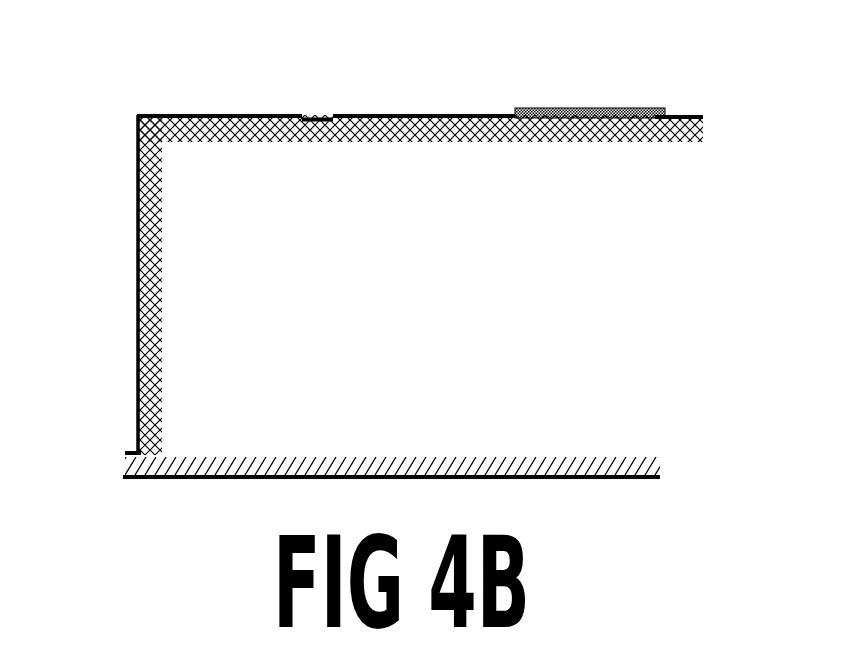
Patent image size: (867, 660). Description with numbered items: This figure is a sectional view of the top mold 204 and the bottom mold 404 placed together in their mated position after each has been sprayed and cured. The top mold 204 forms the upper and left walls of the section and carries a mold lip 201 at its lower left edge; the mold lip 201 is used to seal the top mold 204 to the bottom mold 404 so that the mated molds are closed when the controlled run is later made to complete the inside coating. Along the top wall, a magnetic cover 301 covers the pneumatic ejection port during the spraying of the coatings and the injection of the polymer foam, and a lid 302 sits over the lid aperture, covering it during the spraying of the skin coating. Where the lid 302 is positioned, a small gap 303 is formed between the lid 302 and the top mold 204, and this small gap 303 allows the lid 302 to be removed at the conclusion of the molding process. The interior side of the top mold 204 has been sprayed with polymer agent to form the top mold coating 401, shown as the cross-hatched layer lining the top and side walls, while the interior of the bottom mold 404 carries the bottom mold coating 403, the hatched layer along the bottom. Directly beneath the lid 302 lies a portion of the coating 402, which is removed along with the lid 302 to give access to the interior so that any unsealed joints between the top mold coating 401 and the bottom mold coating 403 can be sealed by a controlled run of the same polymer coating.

The top mold 204 is at (233, 113).
The mold lip 201 is at (127, 453).
The magnetic cover 301 is at (317, 115).
The lid 302 is at (615, 118).
The small gap 303 is at (663, 113).
The top mold coating 401 is at (462, 142).
The portion of the coating 402 is at (590, 133).
The bottom mold coating 403 is at (383, 467).
The bottom mold 404 is at (165, 478).